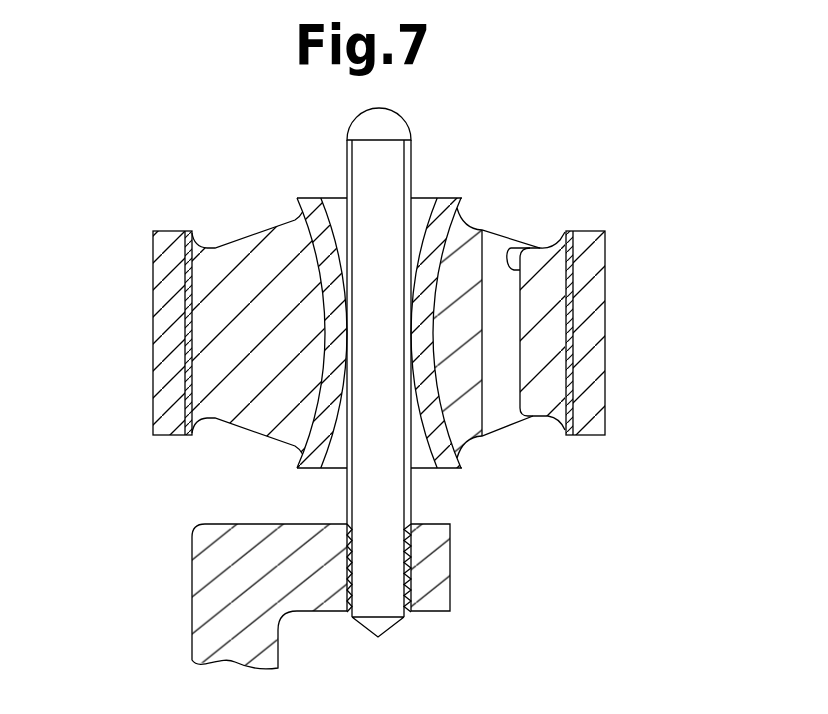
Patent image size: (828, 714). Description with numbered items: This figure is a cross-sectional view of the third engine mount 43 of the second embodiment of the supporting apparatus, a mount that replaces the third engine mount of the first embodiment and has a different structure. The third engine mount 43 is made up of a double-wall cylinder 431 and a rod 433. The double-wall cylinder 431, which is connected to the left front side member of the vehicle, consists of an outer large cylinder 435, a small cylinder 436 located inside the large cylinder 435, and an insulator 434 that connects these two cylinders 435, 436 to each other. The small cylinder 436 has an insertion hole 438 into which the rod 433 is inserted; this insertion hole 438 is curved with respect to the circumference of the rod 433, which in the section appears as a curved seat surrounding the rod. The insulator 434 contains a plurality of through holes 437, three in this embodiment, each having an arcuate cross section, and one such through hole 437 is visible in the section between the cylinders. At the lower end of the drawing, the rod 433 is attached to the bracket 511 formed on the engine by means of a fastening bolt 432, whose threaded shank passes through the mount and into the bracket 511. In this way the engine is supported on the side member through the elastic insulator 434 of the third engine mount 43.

The third engine mount 43 is at (578, 169).
The double-wall cylinder 431 is at (254, 488).
The fastening bolt 432 is at (390, 598).
The rod 433 is at (412, 145).
The insulator 434 is at (247, 233).
The large cylinder 435 is at (153, 408).
The small cylinder 436 is at (305, 468).
The through hole 437 is at (518, 248).
The insertion hole 438 is at (426, 200).
The bracket 511 is at (450, 566).